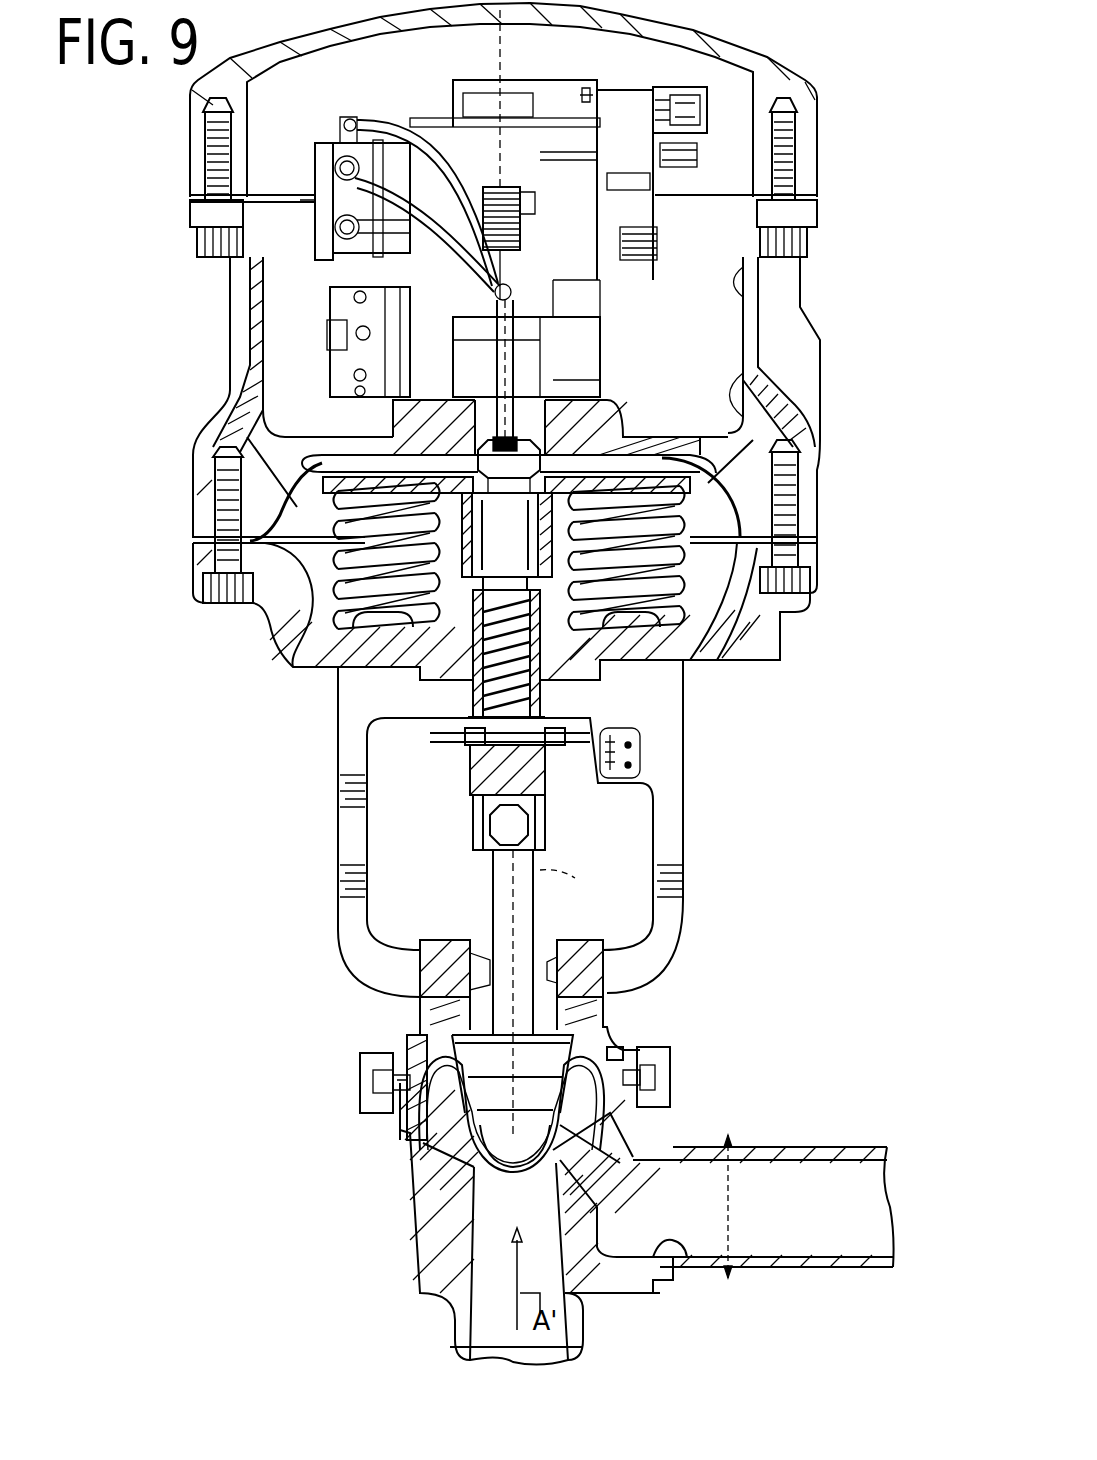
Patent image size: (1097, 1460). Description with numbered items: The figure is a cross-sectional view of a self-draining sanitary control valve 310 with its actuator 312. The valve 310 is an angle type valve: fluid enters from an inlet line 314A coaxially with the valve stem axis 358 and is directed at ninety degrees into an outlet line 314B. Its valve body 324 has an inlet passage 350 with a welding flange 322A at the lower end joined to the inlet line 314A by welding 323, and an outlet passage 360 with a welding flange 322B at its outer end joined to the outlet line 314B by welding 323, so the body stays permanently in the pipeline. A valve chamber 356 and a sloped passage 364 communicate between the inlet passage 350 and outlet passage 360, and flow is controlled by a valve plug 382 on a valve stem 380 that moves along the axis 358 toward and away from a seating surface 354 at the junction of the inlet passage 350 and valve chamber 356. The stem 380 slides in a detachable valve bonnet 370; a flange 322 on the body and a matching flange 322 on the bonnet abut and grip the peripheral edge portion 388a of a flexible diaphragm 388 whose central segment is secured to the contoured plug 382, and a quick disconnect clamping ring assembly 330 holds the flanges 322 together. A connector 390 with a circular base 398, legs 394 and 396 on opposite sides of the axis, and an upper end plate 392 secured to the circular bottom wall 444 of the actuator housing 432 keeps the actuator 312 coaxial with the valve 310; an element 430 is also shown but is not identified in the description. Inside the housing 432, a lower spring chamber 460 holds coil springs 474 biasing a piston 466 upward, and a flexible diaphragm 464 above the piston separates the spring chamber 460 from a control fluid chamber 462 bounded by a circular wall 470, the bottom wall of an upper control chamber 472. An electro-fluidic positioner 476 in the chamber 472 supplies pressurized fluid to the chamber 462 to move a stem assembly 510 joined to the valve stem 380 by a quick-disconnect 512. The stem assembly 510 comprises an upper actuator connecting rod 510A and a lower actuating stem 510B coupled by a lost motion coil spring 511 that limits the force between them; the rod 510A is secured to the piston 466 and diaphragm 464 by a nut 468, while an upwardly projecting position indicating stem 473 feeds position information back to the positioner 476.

The self-draining sanitary control valve 310 is at (272, 1031).
The actuator 312 is at (320, 756).
The inlet line 314A is at (455, 1365).
The outlet line 314B is at (780, 1147).
The flange 322 is at (635, 1085).
The welding flange 322A is at (450, 1340).
The welding flange 322B is at (728, 1140).
The welding 323 is at (590, 1340).
The valve body 324 is at (410, 1215).
The quick disconnect clamping ring assembly 330 is at (350, 1088).
The inlet passage 350 is at (480, 1245).
The seating surface 354 is at (430, 1165).
The valve chamber 356 is at (412, 1036).
The valve stem axis 358 is at (571, 891).
The outlet passage 360 is at (680, 1262).
The sloped passage 364 is at (612, 1165).
The valve bonnet 370 is at (630, 1020).
The valve stem 380 is at (493, 892).
The valve plug 382 is at (537, 1083).
The flexible diaphragm 388 is at (514, 1114).
The peripheral edge portion 388a is at (420, 1128).
The connector 390 is at (325, 872).
The upper end plate 392 is at (580, 697).
The leg 394 is at (340, 810).
The leg 396 is at (665, 826).
The circular base 398 is at (430, 1000).
The connector 430 is at (640, 748).
The housing 432 is at (799, 304).
The circular bottom wall 444 is at (410, 660).
The lower spring chamber 460 is at (282, 626).
The control fluid chamber 462 is at (625, 462).
The flexible diaphragm 464 is at (785, 512).
The piston 466 is at (318, 460).
The nut 468 is at (528, 463).
The circular wall 470 is at (335, 440).
The upper control chamber 472 is at (262, 286).
The position indicating stem 473 is at (515, 372).
The coil springs 474 is at (360, 548).
The electro-fluidic positioner 476 is at (565, 102).
The stem assembly 510 is at (447, 757).
The upper actuator connecting rod 510A is at (468, 650).
The lower actuating stem 510B is at (555, 748).
The coil spring 511 is at (545, 641).
The quick-disconnect 512 is at (570, 823).